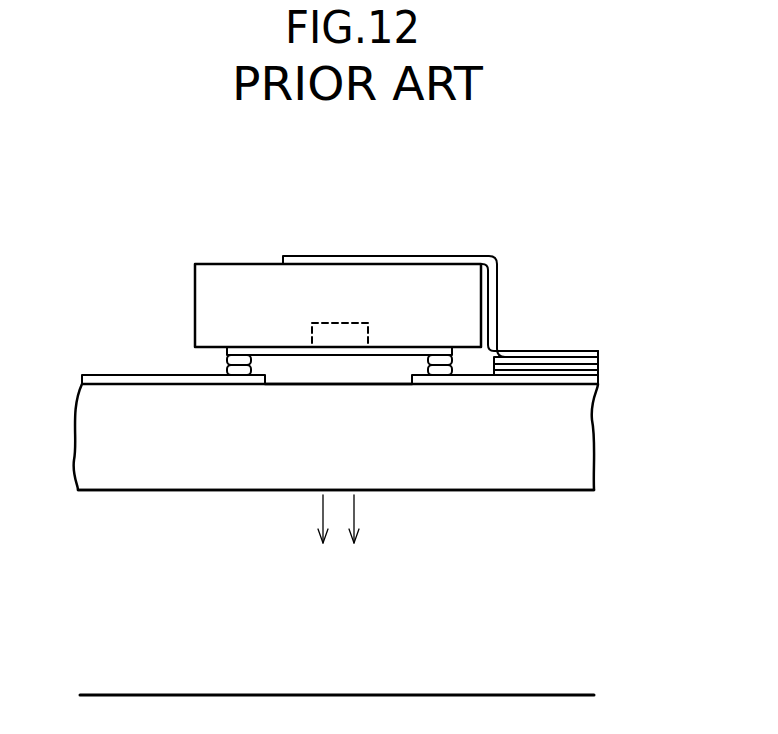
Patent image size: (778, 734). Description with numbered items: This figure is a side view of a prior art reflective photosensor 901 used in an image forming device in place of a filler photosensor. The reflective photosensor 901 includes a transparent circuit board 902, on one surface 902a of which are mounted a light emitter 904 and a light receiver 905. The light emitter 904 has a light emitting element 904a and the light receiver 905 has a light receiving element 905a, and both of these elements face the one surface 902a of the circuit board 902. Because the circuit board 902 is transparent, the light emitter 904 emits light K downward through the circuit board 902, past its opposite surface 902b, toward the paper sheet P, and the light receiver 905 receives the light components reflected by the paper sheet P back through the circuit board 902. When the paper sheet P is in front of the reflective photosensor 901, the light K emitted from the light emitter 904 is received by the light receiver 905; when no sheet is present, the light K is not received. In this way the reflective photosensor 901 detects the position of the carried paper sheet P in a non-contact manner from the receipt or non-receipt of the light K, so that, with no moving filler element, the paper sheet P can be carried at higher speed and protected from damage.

The reflective photosensor 901 is at (140, 298).
The transparent circuit board 902 is at (570, 445).
The one surface of the circuit board 902a is at (390, 383).
The lower surface of circuit board 902b is at (553, 492).
The light emitter 904 is at (257, 277).
The light receiver 905 is at (338, 305).
The light emitting element 904a is at (362, 323).
The light receiving element 905a is at (340, 335).
The light K is at (317, 549).
The paper sheet P is at (553, 695).